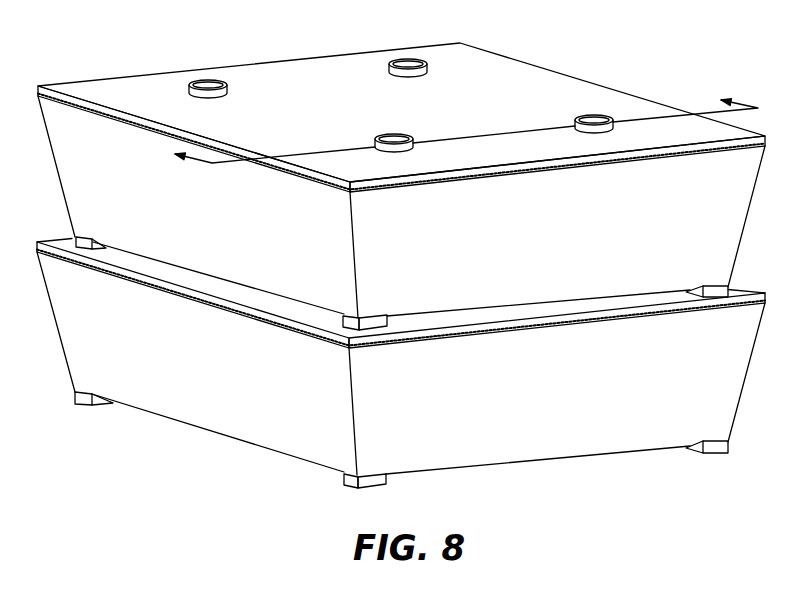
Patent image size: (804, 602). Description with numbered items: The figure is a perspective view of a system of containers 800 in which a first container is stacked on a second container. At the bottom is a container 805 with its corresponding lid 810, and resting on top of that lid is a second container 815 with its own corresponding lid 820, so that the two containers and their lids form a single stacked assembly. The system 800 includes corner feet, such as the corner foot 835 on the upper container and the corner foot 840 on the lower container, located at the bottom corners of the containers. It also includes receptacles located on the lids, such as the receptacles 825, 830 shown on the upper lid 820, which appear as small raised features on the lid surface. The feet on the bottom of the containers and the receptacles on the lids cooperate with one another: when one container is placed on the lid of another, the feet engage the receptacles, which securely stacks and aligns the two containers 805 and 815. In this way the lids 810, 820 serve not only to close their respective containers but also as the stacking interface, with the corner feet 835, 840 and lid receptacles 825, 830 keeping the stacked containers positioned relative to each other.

The system of containers 800 is at (72, 44).
The container 805 is at (67, 367).
The lid 810 is at (62, 240).
The container 815 is at (61, 182).
The lid 820 is at (264, 62).
The receptacle 825 is at (608, 117).
The receptacle 830 is at (414, 143).
The corner foot 835 is at (730, 287).
The corner foot 840 is at (345, 478).